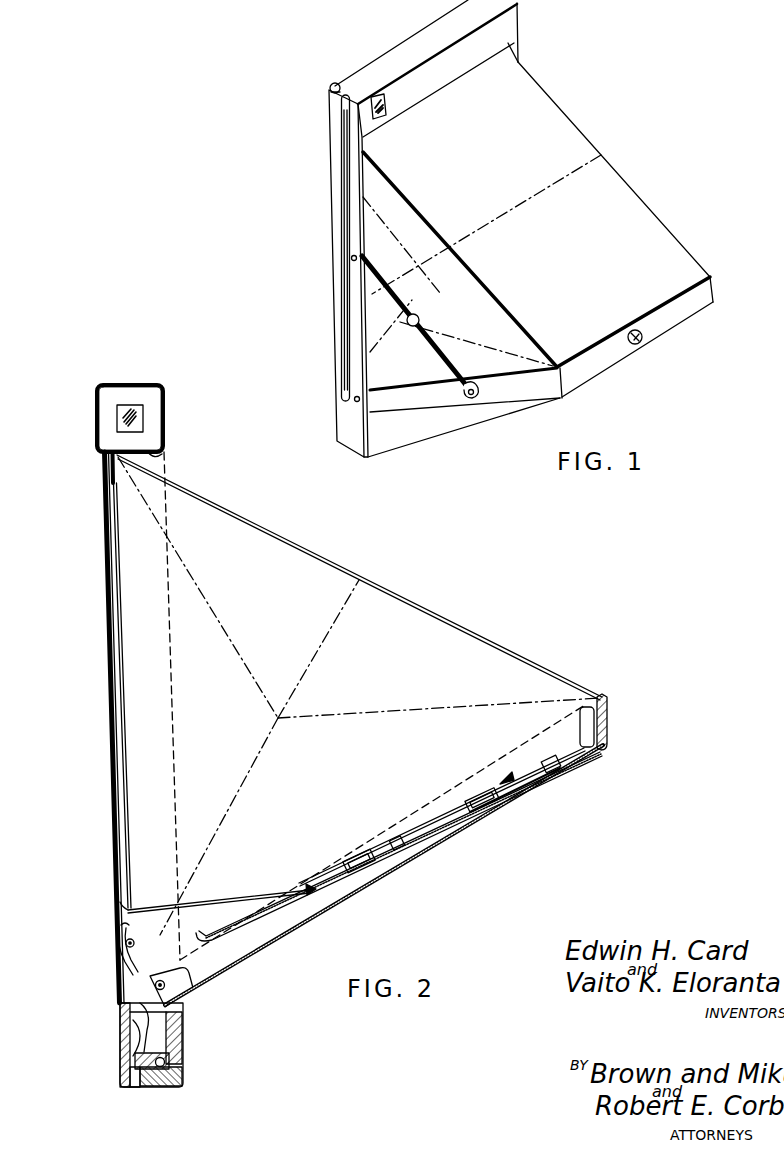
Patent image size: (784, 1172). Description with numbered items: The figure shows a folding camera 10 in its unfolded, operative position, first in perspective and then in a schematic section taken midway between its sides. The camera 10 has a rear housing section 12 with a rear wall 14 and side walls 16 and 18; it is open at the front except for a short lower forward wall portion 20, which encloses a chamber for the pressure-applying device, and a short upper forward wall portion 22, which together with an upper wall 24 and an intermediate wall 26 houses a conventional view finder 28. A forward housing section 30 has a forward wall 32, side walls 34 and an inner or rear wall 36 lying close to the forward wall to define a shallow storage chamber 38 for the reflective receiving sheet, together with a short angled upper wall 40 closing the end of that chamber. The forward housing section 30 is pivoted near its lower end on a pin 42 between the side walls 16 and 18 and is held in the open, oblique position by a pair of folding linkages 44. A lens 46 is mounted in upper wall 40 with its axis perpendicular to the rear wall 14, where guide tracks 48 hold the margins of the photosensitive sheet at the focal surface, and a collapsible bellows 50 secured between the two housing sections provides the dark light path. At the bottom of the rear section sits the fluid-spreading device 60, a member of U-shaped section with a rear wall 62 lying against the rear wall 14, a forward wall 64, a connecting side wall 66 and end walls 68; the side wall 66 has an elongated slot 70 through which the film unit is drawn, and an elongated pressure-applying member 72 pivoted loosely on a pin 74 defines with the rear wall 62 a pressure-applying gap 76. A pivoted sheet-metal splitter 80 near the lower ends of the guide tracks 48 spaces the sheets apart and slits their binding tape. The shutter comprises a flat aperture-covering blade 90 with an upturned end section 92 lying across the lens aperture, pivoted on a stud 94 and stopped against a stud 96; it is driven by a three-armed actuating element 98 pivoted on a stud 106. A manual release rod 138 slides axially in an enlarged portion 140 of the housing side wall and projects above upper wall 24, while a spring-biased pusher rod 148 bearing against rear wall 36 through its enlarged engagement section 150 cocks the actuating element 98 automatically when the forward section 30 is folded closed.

In FIG. 1, the camera 10 is at (316, 145).
In FIG. 1, the rear housing section 12 is at (382, 260).
In FIG. 2, the rear housing section 12 is at (82, 727).
In FIG. 2, the rear wall 14 is at (102, 581).
In FIG. 1, the side wall 16 is at (348, 330).
In FIG. 2, the side wall 18 is at (162, 462).
In FIG. 1, the lower forward wall portion 20 is at (398, 425).
In FIG. 2, the lower forward wall portion 20 is at (183, 1011).
In FIG. 1, the upper forward wall portion 22 is at (470, 53).
In FIG. 1, the upper wall 24 is at (426, 68).
In FIG. 2, the upper wall 24 is at (152, 418).
In FIG. 2, the intermediate wall 26 is at (159, 451).
In FIG. 1, the view finder 28 is at (383, 112).
In FIG. 2, the view finder 28 is at (158, 391).
In FIG. 1, the forward housing section 30 is at (636, 355).
In FIG. 2, the forward housing section 30 is at (413, 849).
In FIG. 2, the forward wall 32 is at (498, 813).
In FIG. 1, the side walls 34 is at (522, 392).
In FIG. 2, the side walls 34 is at (290, 925).
In FIG. 2, the inner or rear wall 36 is at (333, 880).
In FIG. 2, the storage chamber 38 is at (330, 900).
In FIG. 1, the upper wall 40 is at (713, 296).
In FIG. 2, the upper wall 40 is at (608, 745).
In FIG. 2, the pin 42 is at (193, 982).
In FIG. 1, the folding linkages 44 is at (437, 343).
In FIG. 1, the lens 46 is at (642, 345).
In FIG. 2, the lens 46 is at (608, 718).
In FIG. 2, the guide tracks 48 is at (120, 758).
In FIG. 1, the collapsible bellows 50 is at (581, 243).
In FIG. 2, the collapsible bellows 50 is at (358, 706).
In FIG. 2, the fluid-spreading device 60 is at (160, 1065).
In FIG. 2, the rear wall 62 is at (122, 1082).
In FIG. 2, the forward wall 64 is at (184, 1030).
In FIG. 2, the side wall 66 is at (179, 1088).
In FIG. 2, the end walls 68 is at (148, 1012).
In FIG. 2, the elongated slot 70 is at (136, 1089).
In FIG. 2, the pressure-applying member 72 is at (171, 1058).
In FIG. 2, the pin 74 is at (177, 1063).
In FIG. 2, the gap 76 is at (137, 1033).
In FIG. 2, the splitter 80 is at (142, 924).
In FIG. 2, the aperture-covering blade 90 is at (508, 777).
In FIG. 2, the end section 92 is at (580, 712).
In FIG. 2, the stud 94 is at (473, 793).
In FIG. 2, the stud 96 is at (543, 752).
In FIG. 2, the actuating element 98 is at (413, 823).
In FIG. 2, the stud 106 is at (363, 852).
In FIG. 1, the rod 138 is at (333, 85).
In FIG. 1, the enlarged portion 140 is at (340, 198).
In FIG. 2, the pusher rod 148 is at (218, 878).
In FIG. 2, the engagement section 150 is at (304, 884).